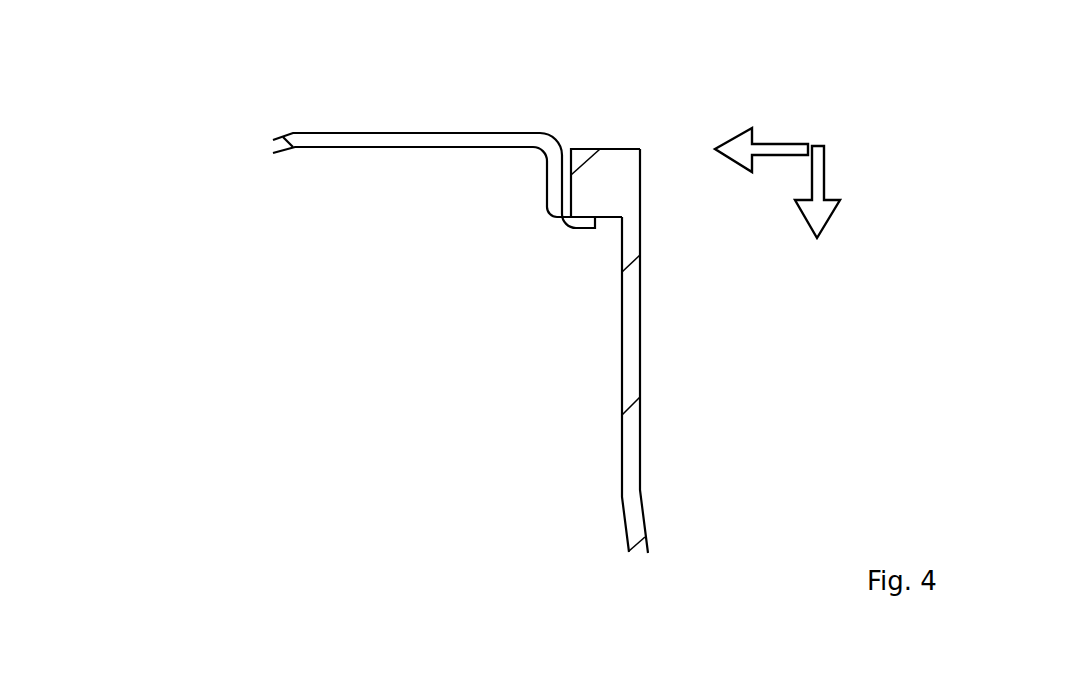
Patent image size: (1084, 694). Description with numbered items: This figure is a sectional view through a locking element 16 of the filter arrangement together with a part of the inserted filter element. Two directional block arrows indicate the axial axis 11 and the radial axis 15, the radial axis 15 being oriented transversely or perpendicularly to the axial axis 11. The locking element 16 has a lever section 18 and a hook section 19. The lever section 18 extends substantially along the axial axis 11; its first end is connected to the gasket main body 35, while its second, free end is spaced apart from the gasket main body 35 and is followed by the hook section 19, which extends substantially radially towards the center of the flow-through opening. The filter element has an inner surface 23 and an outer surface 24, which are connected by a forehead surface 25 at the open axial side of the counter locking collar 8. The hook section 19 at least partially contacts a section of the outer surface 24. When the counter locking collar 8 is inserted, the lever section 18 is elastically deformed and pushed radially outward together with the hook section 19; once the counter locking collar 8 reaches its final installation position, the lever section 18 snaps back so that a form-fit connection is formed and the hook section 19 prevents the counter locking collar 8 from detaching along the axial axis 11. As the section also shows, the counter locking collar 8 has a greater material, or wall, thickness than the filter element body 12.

The gasket main body 35 is at (445, 141).
The locking element 16 is at (532, 125).
The lever section 18 is at (556, 177).
The hook section 19 is at (587, 223).
The counter locking collar 8 is at (608, 187).
The forehead surface 25 is at (608, 148).
The outer surface 24 is at (615, 363).
The filter element body 12 is at (625, 458).
The inner surface 23 is at (642, 397).
The radial axis 15 is at (740, 152).
The axial axis 11 is at (813, 217).